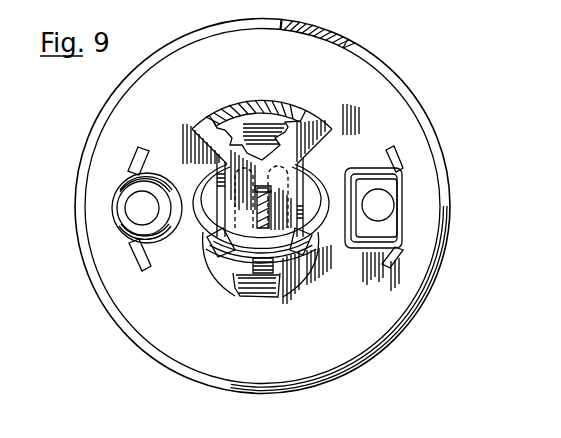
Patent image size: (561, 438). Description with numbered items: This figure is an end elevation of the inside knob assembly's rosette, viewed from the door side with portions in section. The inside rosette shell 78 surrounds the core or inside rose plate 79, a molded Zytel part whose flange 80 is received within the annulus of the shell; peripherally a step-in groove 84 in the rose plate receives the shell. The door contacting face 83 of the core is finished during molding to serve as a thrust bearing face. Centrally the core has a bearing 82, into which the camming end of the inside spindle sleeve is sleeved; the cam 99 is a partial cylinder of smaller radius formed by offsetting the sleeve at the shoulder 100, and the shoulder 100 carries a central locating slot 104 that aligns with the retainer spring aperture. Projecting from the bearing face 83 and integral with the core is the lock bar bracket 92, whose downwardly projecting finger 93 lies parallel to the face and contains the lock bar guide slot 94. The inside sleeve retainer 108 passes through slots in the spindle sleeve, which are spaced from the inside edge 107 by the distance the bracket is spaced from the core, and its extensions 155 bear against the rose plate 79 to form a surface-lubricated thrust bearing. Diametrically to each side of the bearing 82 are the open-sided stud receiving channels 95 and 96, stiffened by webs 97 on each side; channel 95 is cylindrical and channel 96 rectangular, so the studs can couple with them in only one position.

The inside rosette shell 78 is at (417, 99).
The inside rose plate 79 is at (97, 190).
The flange 80 is at (338, 37).
The door contacting face 83 is at (219, 361).
The step-in groove 84 is at (293, 31).
The lock bar bracket 92 is at (231, 103).
The downwardly projecting finger 93 is at (218, 133).
The extensions 155 is at (273, 130).
The bearing 82 is at (212, 224).
The lock bar guide slot 94 is at (258, 226).
The inside sleeve retainer 108 is at (209, 244).
The inside edge 107 is at (304, 243).
The cam 99 is at (226, 250).
The locating slot 104 is at (278, 298).
The shoulder 100 is at (310, 270).
The stud receiving channel 95 is at (160, 168).
The stud receiving channel 96 is at (362, 170).
The webs 97 is at (135, 160).